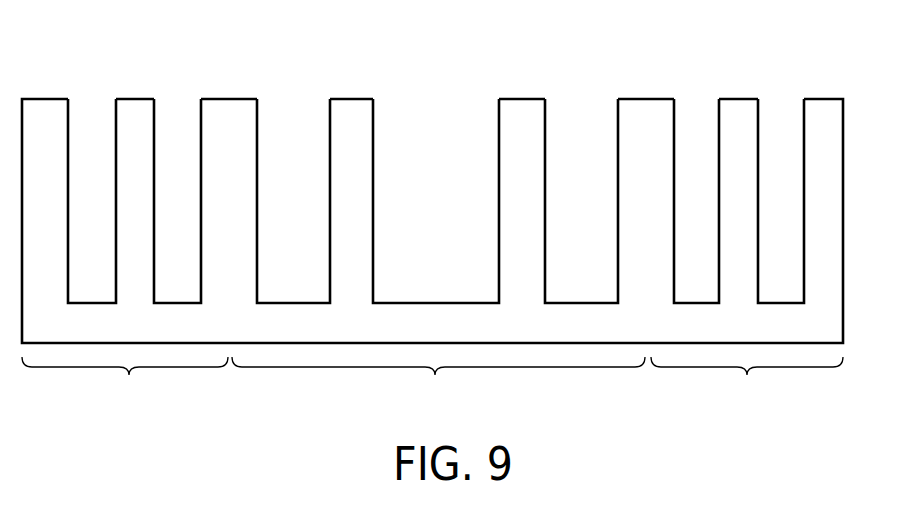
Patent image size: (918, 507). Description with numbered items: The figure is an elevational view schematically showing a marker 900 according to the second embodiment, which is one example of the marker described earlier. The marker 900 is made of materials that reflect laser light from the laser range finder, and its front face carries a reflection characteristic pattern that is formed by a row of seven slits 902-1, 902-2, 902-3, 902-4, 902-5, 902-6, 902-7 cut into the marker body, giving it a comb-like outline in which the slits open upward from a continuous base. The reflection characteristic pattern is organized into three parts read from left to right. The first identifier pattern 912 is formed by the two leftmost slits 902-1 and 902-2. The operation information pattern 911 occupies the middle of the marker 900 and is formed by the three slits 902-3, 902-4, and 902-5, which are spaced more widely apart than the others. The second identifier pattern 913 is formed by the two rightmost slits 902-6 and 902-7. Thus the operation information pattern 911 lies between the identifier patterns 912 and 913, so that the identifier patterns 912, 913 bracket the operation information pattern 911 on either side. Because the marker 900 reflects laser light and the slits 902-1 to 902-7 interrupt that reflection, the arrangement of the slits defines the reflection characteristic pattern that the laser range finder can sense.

The marker 900 is at (843, 112).
The slit 902-1 is at (94, 92).
The slit 902-2 is at (180, 92).
The slit 902-3 is at (294, 92).
The slit 902-4 is at (434, 92).
The slit 902-5 is at (582, 92).
The slit 902-6 is at (696, 92).
The slit 902-7 is at (781, 92).
The operation information pattern 911 is at (438, 384).
The identifier pattern 912 is at (125, 384).
The identifier pattern 913 is at (747, 384).